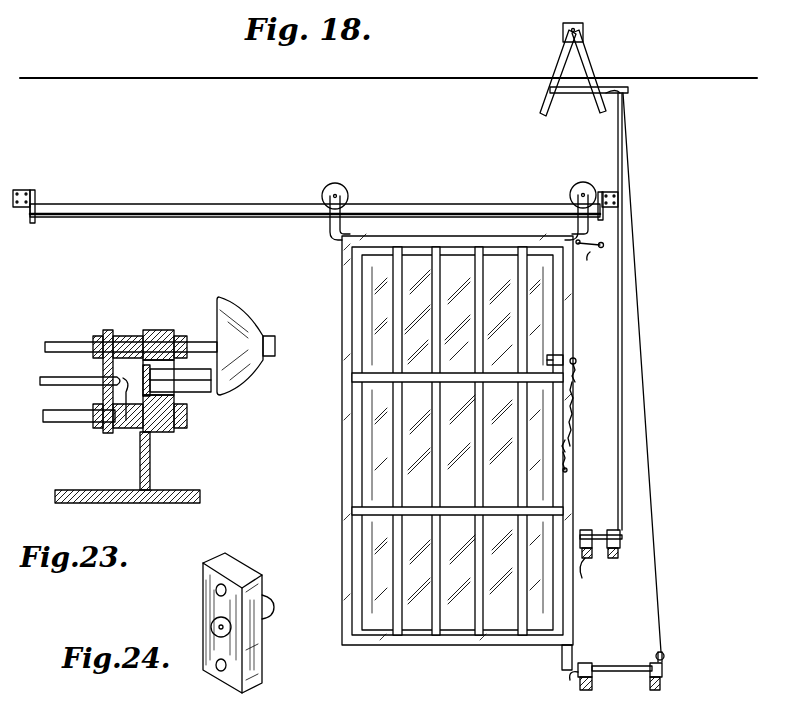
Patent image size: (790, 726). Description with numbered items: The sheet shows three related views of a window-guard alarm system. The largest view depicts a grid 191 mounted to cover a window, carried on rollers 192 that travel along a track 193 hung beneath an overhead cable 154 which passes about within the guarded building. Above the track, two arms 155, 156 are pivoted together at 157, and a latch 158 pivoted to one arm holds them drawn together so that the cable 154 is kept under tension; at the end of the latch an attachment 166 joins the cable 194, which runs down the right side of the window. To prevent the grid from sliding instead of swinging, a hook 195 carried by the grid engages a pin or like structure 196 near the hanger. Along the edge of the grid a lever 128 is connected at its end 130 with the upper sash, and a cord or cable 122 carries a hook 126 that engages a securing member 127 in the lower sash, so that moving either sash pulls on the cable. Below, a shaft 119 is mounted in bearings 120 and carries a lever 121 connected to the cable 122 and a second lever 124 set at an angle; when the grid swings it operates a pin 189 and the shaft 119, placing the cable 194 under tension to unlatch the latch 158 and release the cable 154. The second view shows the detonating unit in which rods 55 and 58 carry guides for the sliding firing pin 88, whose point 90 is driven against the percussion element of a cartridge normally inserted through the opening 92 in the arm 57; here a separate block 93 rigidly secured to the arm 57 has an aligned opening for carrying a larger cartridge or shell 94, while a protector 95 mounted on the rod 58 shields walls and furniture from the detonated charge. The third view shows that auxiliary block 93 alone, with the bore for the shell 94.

In FIG. 18, the cable 154 is at (440, 71).
In FIG. 18, the arm 155 is at (586, 48).
In FIG. 18, the arm 156 is at (558, 58).
In FIG. 18, the pivot 157 is at (576, 26).
In FIG. 18, the latch 158 is at (577, 94).
In FIG. 18, the cable attachment 166 is at (608, 91).
In FIG. 18, the track 193 is at (482, 205).
In FIG. 18, the rollers 192 is at (344, 194).
In FIG. 18, the pin 196 is at (605, 244).
In FIG. 18, the hook 195 is at (588, 262).
In FIG. 18, the grid 191 is at (342, 441).
In FIG. 18, the end of lever 130 is at (545, 360).
In FIG. 18, the lever 128 is at (605, 351).
In FIG. 18, the hook 126 is at (566, 450).
In FIG. 18, the securing member 127 is at (558, 448).
In FIG. 18, the cord or cable 122 is at (566, 466).
In FIG. 18, the cable 194 is at (650, 445).
In FIG. 18, the shaft 119 is at (600, 532).
In FIG. 18, the bearings 120 is at (620, 537).
In FIG. 18, the lever 121 is at (665, 653).
In FIG. 18, the second lever 124 is at (578, 570).
In FIG. 18, the pin 189 is at (562, 658).
In FIG. 23, the rod 58 is at (66, 342).
In FIG. 23, the firing pin 88 is at (46, 387).
In FIG. 23, the rod 55 is at (53, 422).
In FIG. 23, the opening 92 is at (141, 360).
In FIG. 23, the point 90 is at (128, 421).
In FIG. 23, the block 93 is at (160, 330).
In FIG. 24, the block 93 is at (246, 574).
In FIG. 23, the larger cartridge or shell 94 is at (196, 392).
In FIG. 24, the larger cartridge or shell 94 is at (268, 616).
In FIG. 23, the protector 95 is at (240, 316).
In FIG. 23, the arm 57 is at (150, 471).